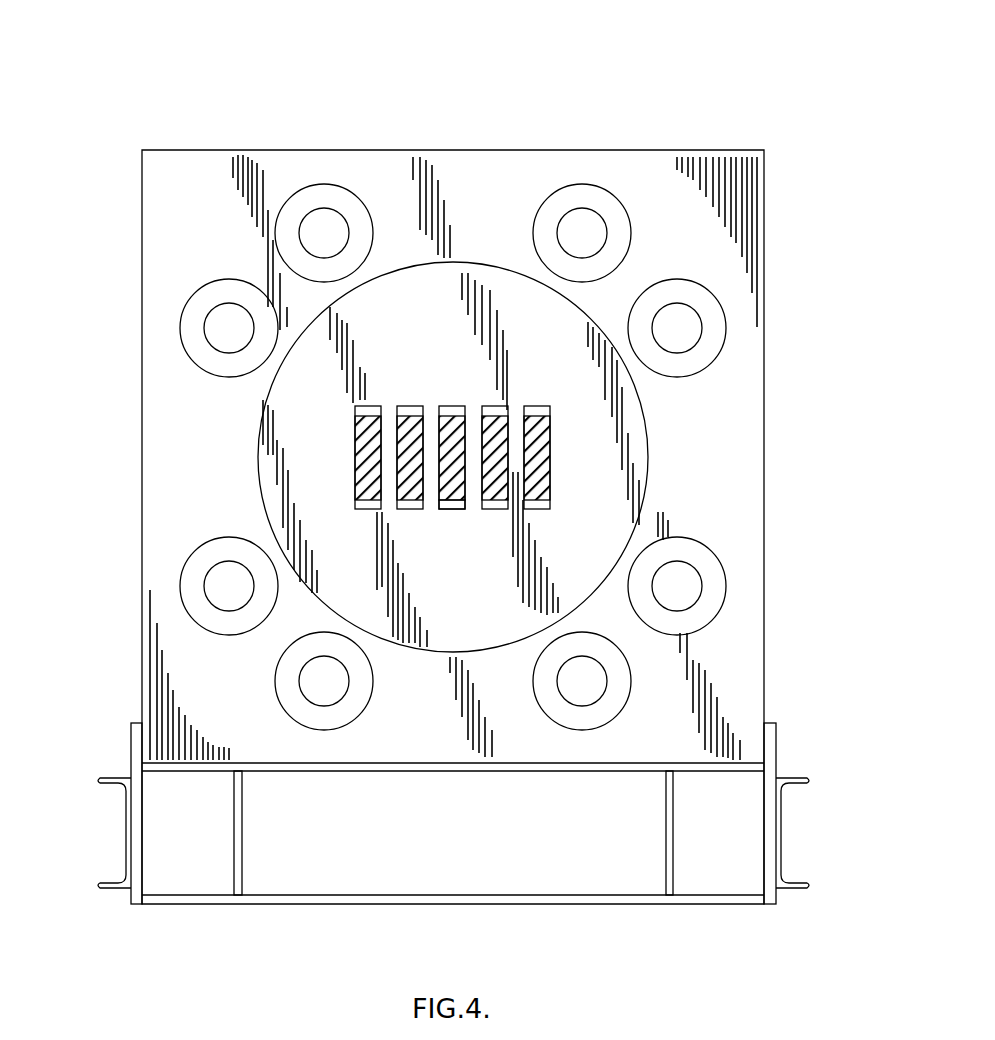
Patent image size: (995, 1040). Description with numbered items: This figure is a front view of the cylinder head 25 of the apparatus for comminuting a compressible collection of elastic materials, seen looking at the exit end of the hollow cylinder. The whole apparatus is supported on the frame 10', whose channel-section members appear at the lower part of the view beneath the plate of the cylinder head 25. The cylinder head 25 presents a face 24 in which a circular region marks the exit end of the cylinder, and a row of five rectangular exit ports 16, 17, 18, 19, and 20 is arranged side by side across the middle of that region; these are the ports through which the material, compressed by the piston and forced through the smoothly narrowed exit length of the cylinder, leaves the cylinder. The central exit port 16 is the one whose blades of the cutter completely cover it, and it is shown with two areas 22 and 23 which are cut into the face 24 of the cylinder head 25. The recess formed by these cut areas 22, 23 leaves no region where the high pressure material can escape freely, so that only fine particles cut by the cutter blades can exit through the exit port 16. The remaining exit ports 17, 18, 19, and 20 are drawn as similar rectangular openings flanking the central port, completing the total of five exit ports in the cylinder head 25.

The frame 10' is at (497, 813).
The exit port 16 is at (452, 440).
The exit port 17 is at (368, 425).
The exit port 18 is at (408, 425).
The exit port 19 is at (495, 428).
The exit port 20 is at (540, 435).
The area 22 is at (449, 410).
The area 23 is at (450, 505).
The face 24 is at (325, 437).
The cylinder head 25 is at (649, 472).